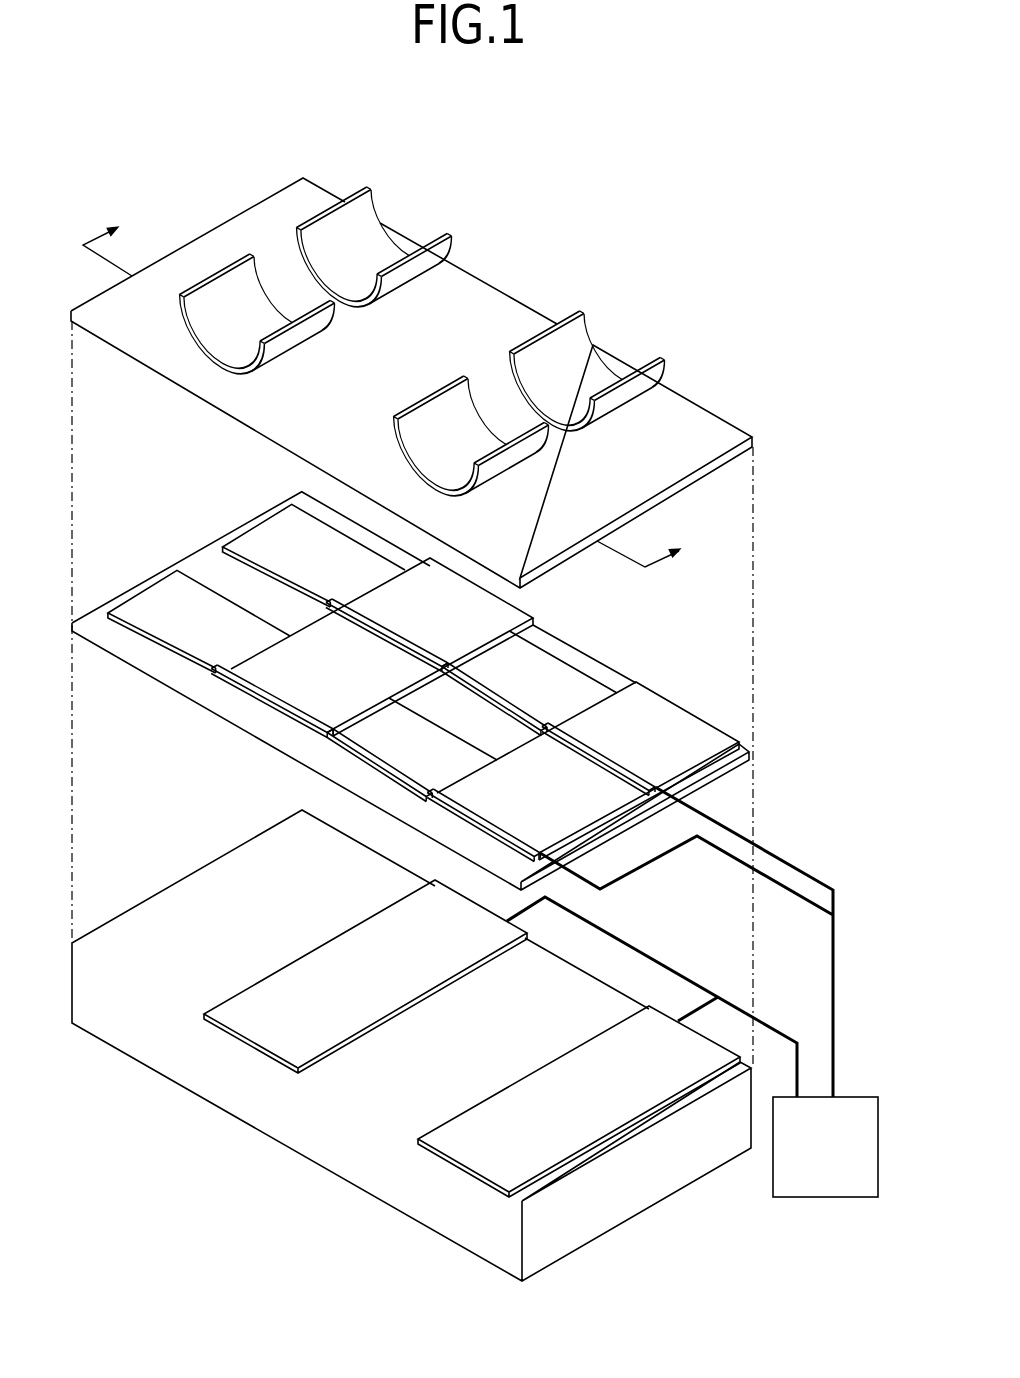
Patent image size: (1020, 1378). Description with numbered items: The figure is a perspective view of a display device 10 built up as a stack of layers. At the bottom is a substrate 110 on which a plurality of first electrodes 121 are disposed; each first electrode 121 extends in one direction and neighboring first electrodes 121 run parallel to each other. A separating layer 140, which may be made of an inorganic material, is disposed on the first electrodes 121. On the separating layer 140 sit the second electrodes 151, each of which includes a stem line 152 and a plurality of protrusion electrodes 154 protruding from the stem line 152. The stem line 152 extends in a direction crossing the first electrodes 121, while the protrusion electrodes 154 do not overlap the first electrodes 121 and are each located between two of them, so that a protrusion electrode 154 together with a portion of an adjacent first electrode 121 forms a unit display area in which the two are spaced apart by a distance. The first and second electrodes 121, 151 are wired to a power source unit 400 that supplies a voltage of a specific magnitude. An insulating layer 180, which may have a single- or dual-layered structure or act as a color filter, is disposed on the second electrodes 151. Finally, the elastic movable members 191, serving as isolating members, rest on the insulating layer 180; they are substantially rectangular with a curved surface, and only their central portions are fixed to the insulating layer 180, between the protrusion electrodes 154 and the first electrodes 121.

The display device 10 is at (471, 132).
The movable member 191 is at (360, 191).
The insulating layer 180 is at (173, 373).
The separating layer 140 is at (207, 563).
The second electrode 151 is at (423, 682).
The protrusion electrode 154 is at (193, 643).
The stem line 152 is at (270, 698).
The substrate 110 is at (272, 1112).
The first electrode 121 is at (469, 1146).
The power source unit 400 is at (808, 1200).